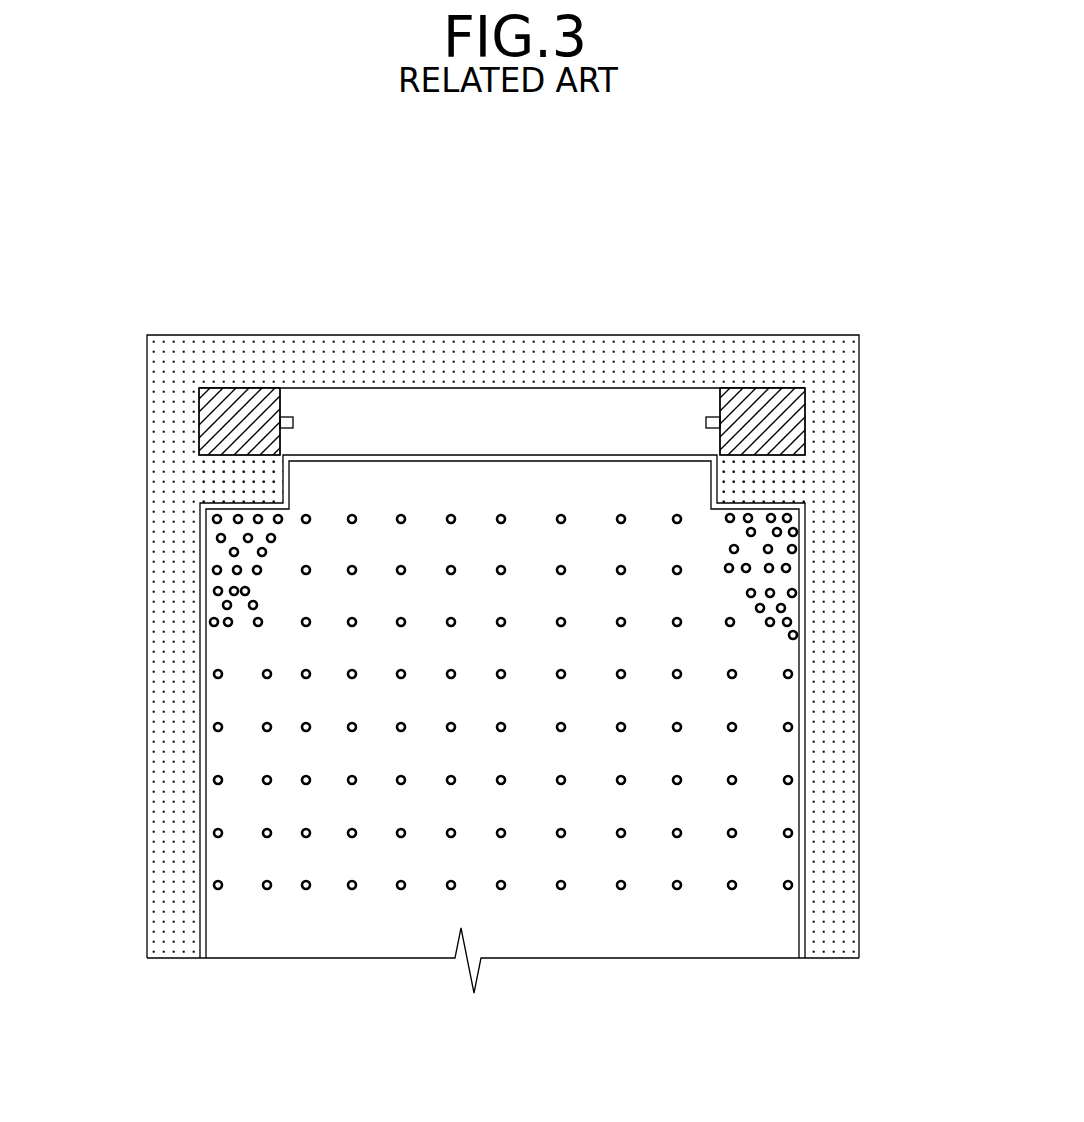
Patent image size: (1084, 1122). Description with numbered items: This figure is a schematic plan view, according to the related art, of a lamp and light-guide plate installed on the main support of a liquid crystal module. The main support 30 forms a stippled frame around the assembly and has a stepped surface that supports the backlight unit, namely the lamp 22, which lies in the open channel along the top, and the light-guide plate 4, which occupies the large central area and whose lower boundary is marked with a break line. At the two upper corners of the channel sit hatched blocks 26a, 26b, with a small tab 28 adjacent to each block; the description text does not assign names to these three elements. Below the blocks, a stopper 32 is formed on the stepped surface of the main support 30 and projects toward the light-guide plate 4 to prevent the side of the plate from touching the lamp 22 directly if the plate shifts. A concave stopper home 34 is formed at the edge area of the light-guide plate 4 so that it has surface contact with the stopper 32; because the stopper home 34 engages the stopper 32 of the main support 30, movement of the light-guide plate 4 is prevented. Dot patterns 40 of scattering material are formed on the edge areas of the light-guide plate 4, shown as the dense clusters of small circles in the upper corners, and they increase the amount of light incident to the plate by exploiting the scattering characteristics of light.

The light-guide plate 4 is at (713, 957).
The lamp 22 is at (553, 405).
The first electrode 26a is at (199, 422).
The second electrode 26b is at (805, 417).
The contact tab 28 is at (713, 413).
The main support 30 is at (835, 893).
The stopper 32 is at (243, 470).
The stopper home 34 is at (214, 513).
The dot patterns 40 is at (800, 592).